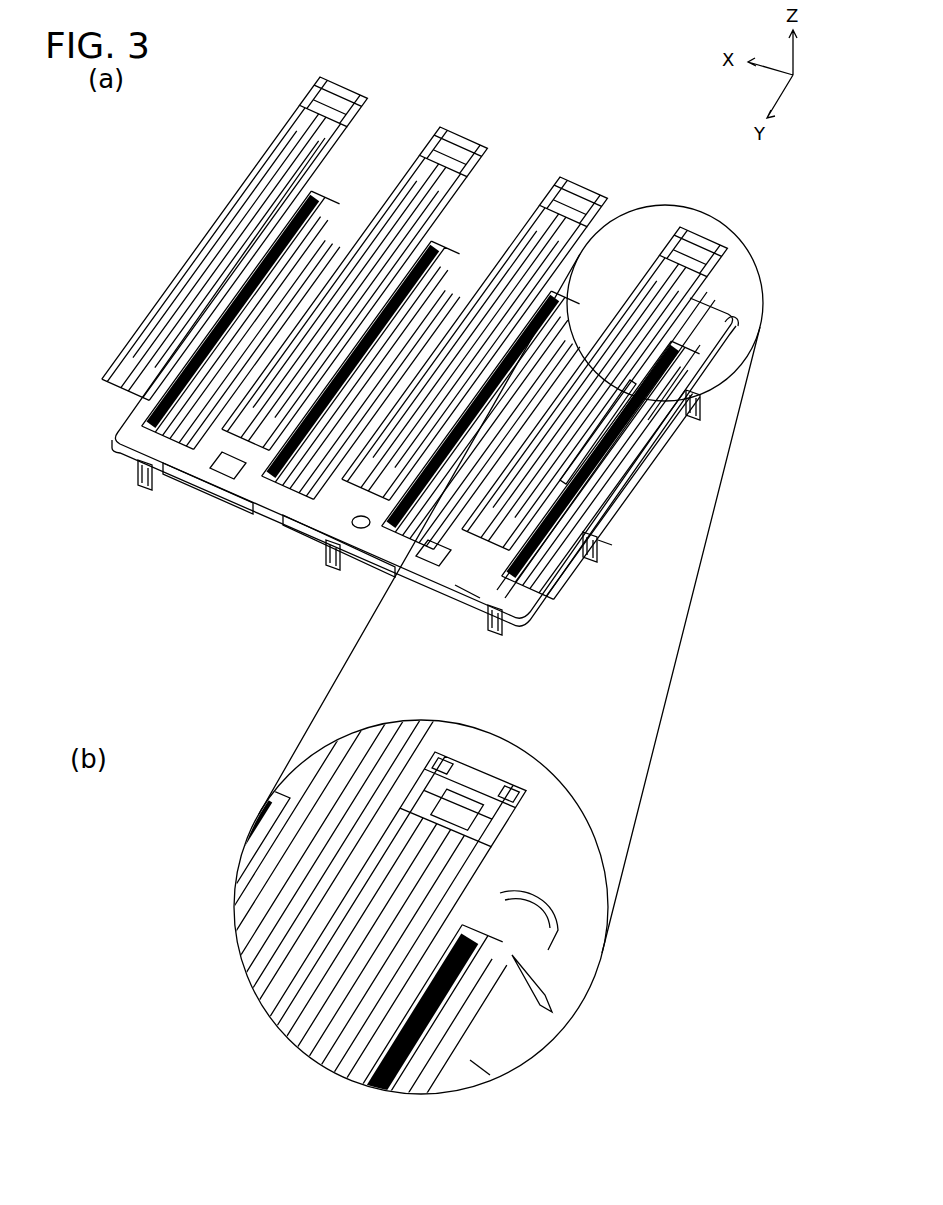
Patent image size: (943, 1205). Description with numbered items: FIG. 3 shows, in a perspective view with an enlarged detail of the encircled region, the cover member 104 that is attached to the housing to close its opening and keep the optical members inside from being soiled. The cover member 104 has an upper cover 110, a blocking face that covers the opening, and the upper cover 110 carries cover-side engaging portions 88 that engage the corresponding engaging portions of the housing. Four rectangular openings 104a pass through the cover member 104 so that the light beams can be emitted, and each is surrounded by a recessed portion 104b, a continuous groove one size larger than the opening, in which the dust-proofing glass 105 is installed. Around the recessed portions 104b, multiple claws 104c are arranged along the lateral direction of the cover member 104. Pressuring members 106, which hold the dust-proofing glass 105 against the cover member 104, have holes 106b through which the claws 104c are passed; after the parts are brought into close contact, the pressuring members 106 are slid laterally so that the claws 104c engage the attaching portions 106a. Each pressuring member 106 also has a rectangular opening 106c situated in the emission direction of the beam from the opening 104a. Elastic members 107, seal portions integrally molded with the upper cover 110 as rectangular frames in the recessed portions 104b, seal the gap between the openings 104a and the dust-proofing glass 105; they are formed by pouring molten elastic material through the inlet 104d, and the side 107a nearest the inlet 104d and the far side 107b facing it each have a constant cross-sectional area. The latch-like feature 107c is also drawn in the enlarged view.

The cover-side engaging portion 88 is at (143, 490).
The cover member 104 is at (268, 562).
The rectangular opening 104a is at (150, 440).
The recessed portion 104b is at (478, 1068).
The claw 104c is at (498, 891).
The inlet 104d is at (660, 425).
The dust-proofing glass 105 is at (340, 138).
The pressuring member 106 is at (340, 84).
The attaching portion 106a is at (418, 818).
The hole 106b is at (438, 767).
The rectangular opening 106c is at (335, 983).
The elastic member 107 is at (128, 443).
The side of the elastic member closest to the inlet 107a is at (465, 592).
The side of the elastic member facing the inlet 107b is at (606, 547).
The latch portion 107c is at (740, 323).
The upper cover 110 is at (320, 545).